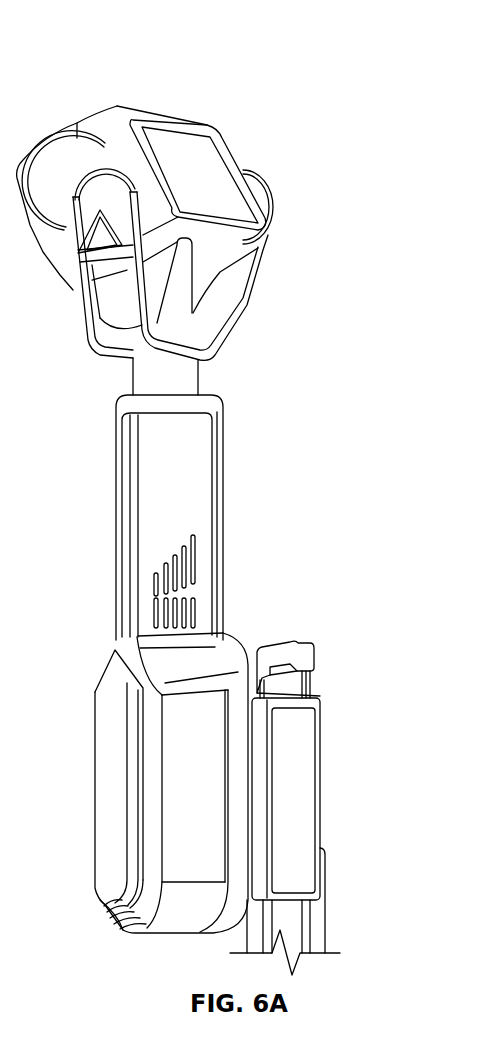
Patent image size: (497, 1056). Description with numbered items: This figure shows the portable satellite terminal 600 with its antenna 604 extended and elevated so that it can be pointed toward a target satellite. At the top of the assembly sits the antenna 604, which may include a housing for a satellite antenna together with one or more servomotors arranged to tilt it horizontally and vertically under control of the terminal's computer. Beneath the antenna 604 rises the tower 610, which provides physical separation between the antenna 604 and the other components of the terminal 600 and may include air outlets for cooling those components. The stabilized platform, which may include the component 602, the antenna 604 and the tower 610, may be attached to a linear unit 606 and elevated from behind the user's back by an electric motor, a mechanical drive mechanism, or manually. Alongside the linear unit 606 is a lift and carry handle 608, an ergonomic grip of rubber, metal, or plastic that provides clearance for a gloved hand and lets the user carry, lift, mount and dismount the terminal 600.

The portable satellite terminal 600 is at (335, 70).
The stabilized platform component 602 is at (97, 895).
The antenna 604 is at (272, 212).
The linear unit 606 is at (322, 747).
The lift and/or carry handle 608 is at (315, 648).
The tower 610 is at (203, 505).